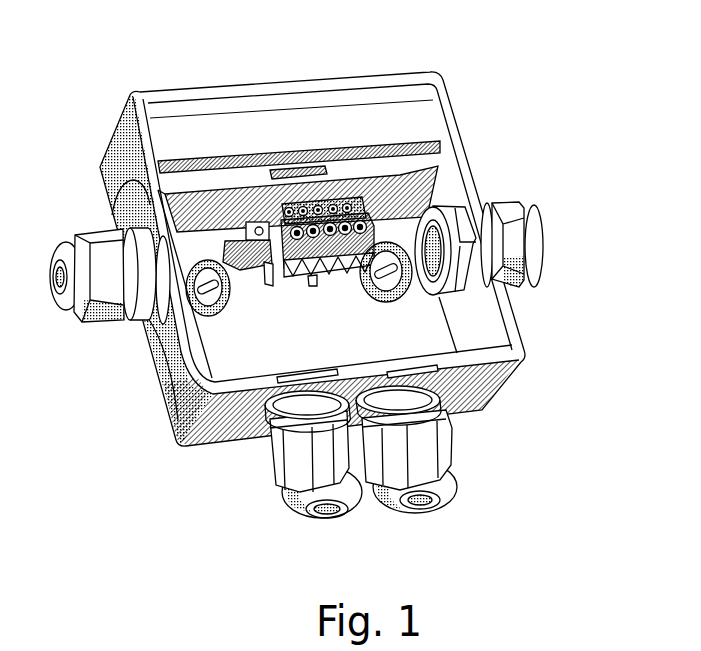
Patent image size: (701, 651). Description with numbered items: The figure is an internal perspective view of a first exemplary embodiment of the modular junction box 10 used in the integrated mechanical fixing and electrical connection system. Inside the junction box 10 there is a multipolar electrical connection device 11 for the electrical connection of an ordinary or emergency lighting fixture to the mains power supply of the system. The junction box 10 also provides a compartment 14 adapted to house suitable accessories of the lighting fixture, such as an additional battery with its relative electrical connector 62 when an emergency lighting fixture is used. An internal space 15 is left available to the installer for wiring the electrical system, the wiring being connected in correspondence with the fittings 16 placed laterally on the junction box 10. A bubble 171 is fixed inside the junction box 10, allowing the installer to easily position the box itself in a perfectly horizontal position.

The junction box 10 is at (470, 145).
The multipolar electrical connection device 11 is at (437, 199).
The compartment 14 is at (247, 130).
The internal space 15 is at (205, 344).
The fittings 16 is at (517, 247).
The electrical connector 62 is at (327, 170).
The bubble 171 is at (232, 233).